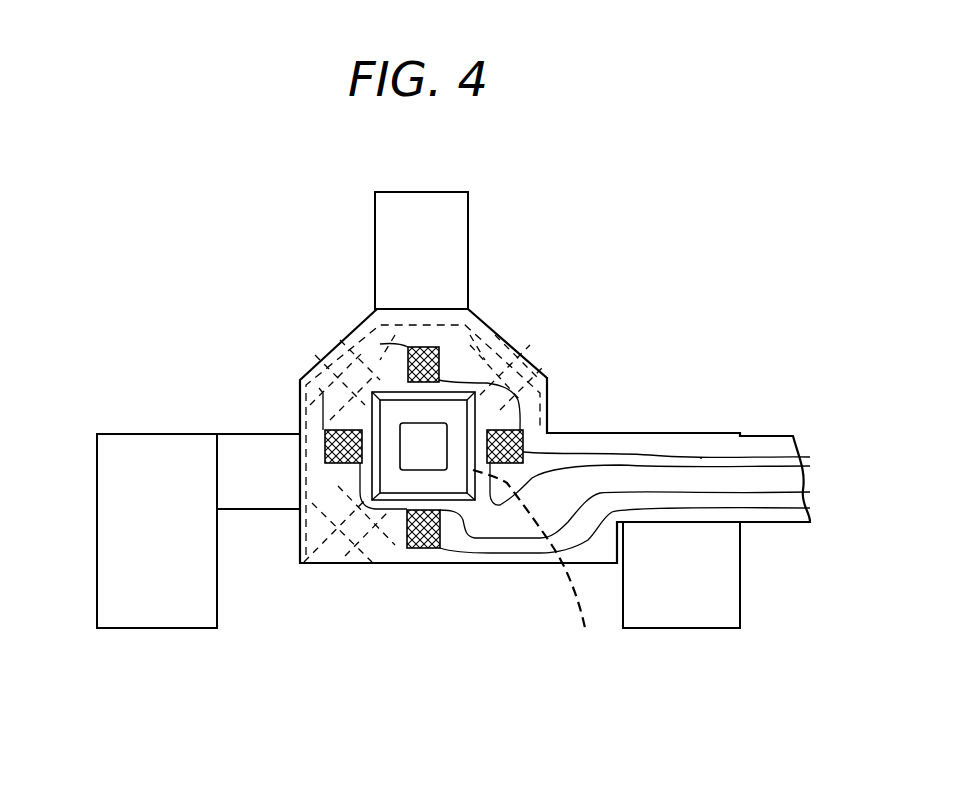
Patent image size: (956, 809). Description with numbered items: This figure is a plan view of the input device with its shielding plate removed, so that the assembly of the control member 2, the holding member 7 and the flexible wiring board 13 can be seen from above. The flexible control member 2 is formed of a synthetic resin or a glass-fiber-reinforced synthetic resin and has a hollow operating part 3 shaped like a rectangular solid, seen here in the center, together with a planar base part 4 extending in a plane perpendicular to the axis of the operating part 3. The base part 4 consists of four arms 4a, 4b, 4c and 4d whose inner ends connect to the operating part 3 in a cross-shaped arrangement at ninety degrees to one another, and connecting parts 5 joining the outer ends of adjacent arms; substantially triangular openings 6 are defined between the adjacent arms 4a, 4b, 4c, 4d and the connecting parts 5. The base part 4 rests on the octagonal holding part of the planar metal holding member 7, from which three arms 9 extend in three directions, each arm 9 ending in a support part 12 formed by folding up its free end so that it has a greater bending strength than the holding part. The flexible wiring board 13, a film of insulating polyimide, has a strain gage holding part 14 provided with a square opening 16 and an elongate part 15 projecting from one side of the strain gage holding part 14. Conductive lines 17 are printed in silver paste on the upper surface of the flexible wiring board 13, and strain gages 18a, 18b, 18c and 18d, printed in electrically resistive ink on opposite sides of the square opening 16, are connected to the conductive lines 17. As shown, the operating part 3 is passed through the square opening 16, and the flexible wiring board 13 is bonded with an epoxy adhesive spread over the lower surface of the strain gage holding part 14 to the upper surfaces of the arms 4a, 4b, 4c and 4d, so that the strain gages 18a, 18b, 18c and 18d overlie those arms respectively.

The control member 2 is at (396, 389).
The operating part 3 is at (470, 398).
The base part 4 is at (545, 388).
The arm 4a is at (365, 575).
The arm 4b is at (480, 318).
The arm 4c is at (530, 370).
The arm 4d is at (332, 372).
The connecting part 5 is at (350, 352).
The opening 6 is at (328, 347).
The holding member 7 is at (97, 573).
The arm 9 is at (243, 448).
The support part 12 is at (448, 210).
The flexible wiring board 13 is at (762, 432).
The strain gage holding part 14 is at (338, 555).
The elongate part 15 is at (772, 515).
The square opening 16 is at (536, 566).
The conductive lines 17 is at (700, 458).
The strain gage 18a is at (420, 548).
The strain gage 18b is at (418, 345).
The strain gage 18c is at (523, 430).
The strain gage 18d is at (325, 432).